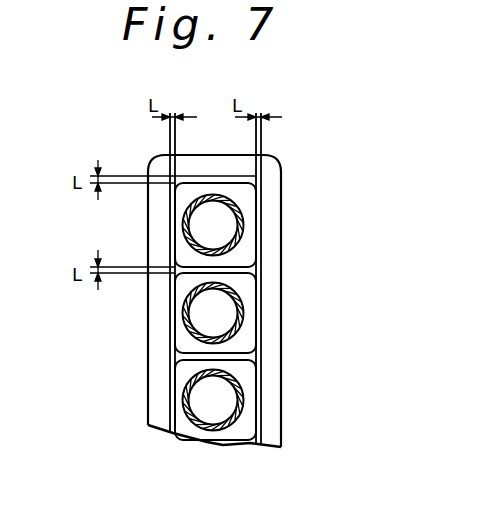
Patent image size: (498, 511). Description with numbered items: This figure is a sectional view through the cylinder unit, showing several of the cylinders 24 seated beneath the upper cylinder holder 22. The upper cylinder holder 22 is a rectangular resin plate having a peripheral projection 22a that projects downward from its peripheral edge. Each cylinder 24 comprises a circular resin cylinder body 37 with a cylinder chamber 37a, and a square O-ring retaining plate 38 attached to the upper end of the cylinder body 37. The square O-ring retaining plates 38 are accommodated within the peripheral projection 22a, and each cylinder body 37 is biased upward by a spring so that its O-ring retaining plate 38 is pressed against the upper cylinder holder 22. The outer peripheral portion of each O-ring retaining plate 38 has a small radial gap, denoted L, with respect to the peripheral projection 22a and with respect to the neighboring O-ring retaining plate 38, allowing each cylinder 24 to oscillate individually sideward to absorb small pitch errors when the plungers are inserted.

The upper cylinder holder 22 is at (282, 257).
The peripheral projection 22a is at (273, 222).
The cylinder 24 is at (366, 105).
The cylinder body 37 is at (243, 222).
The cylinder chamber 37a is at (228, 233).
The O-ring retaining plate 38 is at (252, 192).